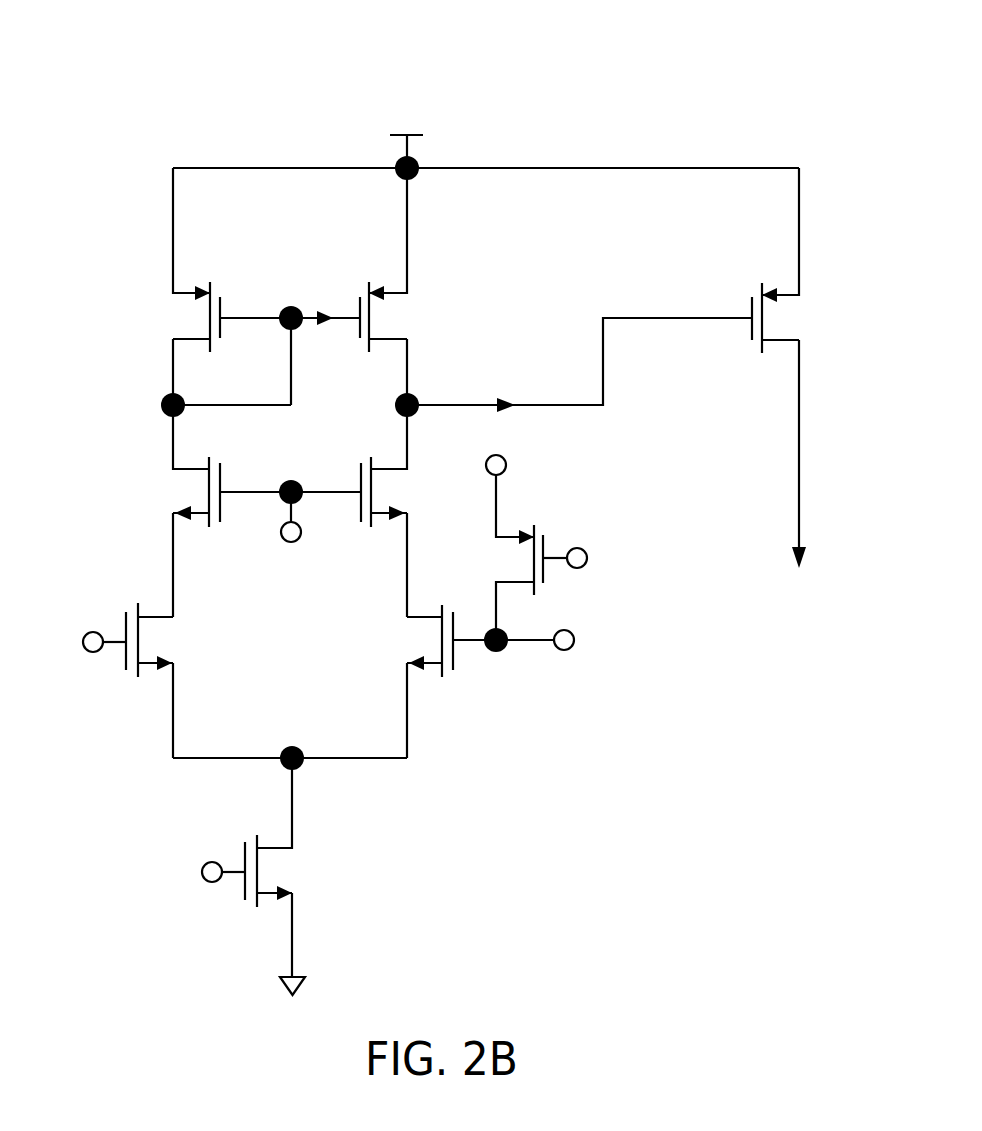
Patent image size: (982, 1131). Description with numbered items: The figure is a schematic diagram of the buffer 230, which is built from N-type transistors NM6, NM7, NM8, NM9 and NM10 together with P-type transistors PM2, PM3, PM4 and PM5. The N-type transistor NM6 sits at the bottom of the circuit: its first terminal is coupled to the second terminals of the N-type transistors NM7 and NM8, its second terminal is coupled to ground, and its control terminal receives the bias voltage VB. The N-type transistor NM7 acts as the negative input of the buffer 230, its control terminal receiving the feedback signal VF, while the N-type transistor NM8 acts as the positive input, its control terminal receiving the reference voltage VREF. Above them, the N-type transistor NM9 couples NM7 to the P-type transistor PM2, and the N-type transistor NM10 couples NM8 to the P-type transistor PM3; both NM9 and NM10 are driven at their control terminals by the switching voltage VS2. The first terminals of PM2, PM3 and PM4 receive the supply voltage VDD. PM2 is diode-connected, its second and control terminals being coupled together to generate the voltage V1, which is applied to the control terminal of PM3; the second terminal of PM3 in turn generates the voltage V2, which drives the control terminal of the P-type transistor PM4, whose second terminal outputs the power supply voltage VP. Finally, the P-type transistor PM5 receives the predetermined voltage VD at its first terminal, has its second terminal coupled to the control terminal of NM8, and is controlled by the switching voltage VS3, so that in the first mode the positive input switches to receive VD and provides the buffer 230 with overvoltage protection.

The buffer 230 is at (385, 35).
The supply voltage VDD is at (486, 138).
The P-type transistor PM2 is at (180, 286).
The P-type transistor PM3 is at (396, 286).
The P-type transistor PM4 is at (787, 260).
The P-type transistor PM5 is at (508, 557).
The N-type transistor NM6 is at (290, 870).
The N-type transistor NM7 is at (164, 680).
The N-type transistor NM8 is at (415, 681).
The N-type transistor NM9 is at (180, 511).
The N-type transistor NM10 is at (406, 511).
The voltage V1 is at (260, 351).
The voltage V2 is at (573, 367).
The power supply voltage VP is at (803, 470).
The predetermined voltage VD is at (496, 452).
The switching voltage VS2 is at (290, 527).
The switching voltage VS3 is at (589, 557).
The feedback signal VF is at (86, 641).
The bias voltage VB is at (205, 871).
The reference voltage VREF is at (545, 640).